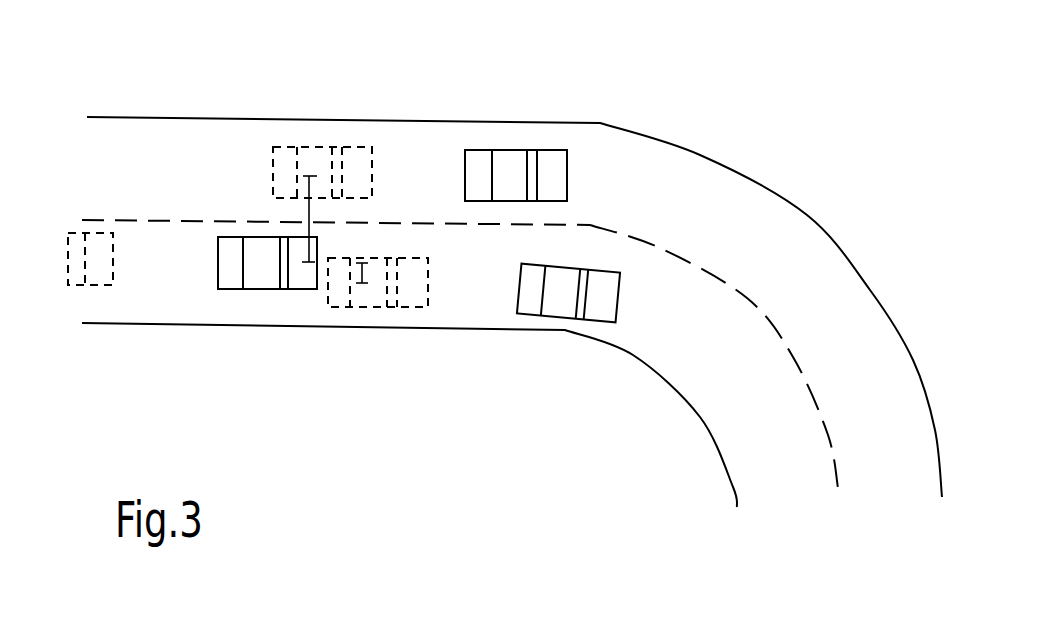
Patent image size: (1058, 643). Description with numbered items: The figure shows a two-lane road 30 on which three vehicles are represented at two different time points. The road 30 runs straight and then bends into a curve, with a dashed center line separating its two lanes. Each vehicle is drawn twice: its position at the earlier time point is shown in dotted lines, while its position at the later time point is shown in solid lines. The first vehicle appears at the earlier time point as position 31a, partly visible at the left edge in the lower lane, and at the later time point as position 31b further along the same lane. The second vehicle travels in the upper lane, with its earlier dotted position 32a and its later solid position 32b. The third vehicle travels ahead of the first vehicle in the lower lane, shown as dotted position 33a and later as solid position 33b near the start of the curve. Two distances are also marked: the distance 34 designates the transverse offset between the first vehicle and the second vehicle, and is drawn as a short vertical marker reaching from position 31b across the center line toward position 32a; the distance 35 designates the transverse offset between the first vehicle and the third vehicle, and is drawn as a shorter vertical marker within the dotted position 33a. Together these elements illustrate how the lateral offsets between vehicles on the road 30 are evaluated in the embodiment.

The two-lane road 30 is at (807, 215).
The position of vehicle 31 at time point t0 31a is at (67, 287).
The position of vehicle 31 at time point t1 31b is at (242, 289).
The position of vehicle 32 at time point t0 32a is at (322, 147).
The position of vehicle 32 at time point t1 32b is at (522, 150).
The position of vehicle 33 at time point t0 33a is at (372, 307).
The position of vehicle 33 at time point t1 33b is at (562, 314).
The distance 34 is at (308, 227).
The distance 35 is at (362, 283).